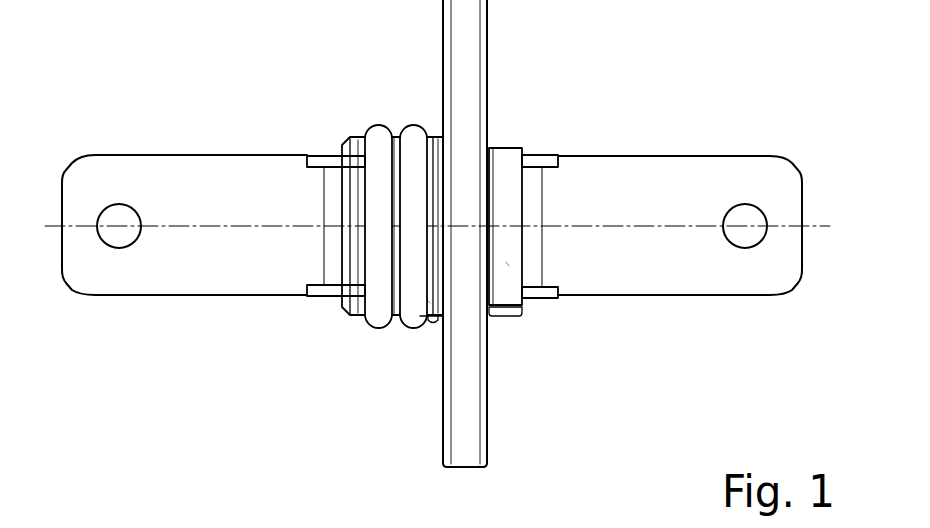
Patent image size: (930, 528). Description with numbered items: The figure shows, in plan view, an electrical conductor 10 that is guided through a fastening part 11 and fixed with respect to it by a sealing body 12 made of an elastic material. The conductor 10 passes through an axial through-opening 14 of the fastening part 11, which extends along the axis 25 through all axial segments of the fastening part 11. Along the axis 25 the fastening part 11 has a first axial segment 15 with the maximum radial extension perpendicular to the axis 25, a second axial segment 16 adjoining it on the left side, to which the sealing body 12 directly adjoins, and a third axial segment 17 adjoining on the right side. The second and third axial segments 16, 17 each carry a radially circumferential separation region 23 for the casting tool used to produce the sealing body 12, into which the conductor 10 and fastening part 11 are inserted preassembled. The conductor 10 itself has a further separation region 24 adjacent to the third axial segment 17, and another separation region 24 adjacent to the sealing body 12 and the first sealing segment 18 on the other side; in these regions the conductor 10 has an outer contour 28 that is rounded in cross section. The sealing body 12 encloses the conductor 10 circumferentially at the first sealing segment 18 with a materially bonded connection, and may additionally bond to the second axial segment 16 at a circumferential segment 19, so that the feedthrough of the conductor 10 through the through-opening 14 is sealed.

The electrical conductor 10 is at (740, 288).
The fastening part 11 is at (470, 437).
The sealing body 12 is at (367, 322).
The axial through-opening 14 is at (548, 282).
The first axial segment 15 is at (443, 468).
The second axial segment 16 is at (433, 323).
The third axial segment 17 is at (505, 317).
The first sealing segment 18 is at (338, 125).
The circumferential segment 19 is at (429, 127).
The separation region 23 is at (429, 303).
The further separation region 24 is at (544, 206).
The axis 25 is at (220, 225).
The outer contour 28 is at (548, 152).